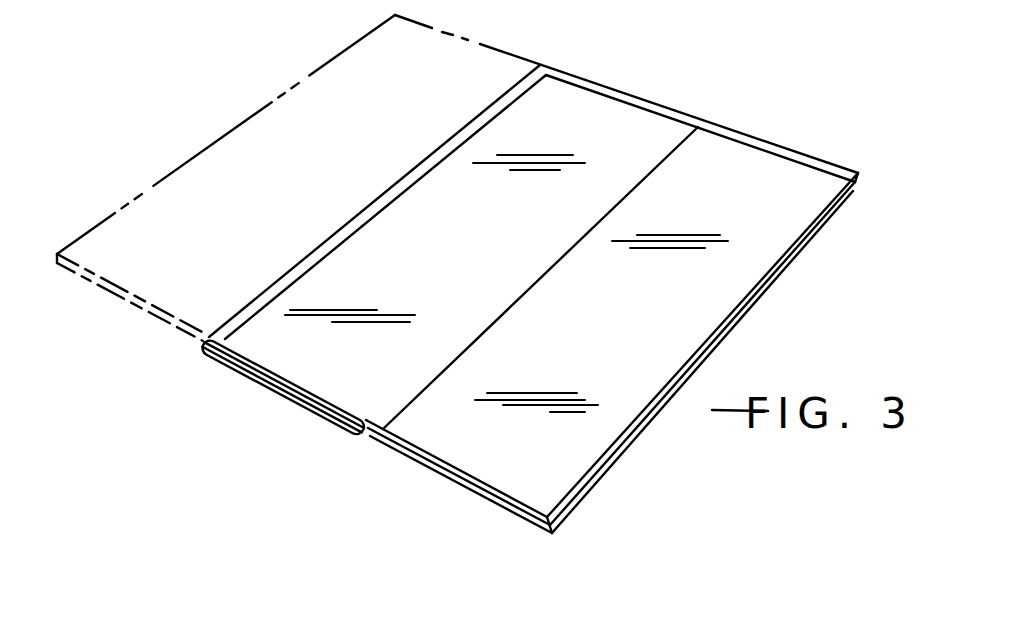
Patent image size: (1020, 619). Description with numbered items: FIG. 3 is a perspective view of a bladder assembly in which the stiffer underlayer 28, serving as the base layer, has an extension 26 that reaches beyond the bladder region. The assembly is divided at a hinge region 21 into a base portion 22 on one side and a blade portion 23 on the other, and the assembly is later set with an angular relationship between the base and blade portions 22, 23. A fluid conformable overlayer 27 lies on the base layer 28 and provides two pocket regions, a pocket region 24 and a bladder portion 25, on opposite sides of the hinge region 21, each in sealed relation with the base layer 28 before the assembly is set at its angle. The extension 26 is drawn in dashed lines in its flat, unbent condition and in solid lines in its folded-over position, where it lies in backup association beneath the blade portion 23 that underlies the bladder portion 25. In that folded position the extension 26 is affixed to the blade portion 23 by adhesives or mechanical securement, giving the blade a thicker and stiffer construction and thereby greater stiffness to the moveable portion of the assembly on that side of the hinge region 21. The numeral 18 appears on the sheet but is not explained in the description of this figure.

The sign assembly 18 is at (226, 127).
The hinge region 21 is at (750, 99).
The base portion 22 is at (828, 163).
The blade portion 23 is at (540, 205).
The pocket region 24 is at (787, 218).
The bladder portion 25 is at (637, 132).
The extension 26 is at (127, 302).
The fluid conformable overlayer 27 is at (552, 127).
The stiffer underlayer 28 is at (433, 473).